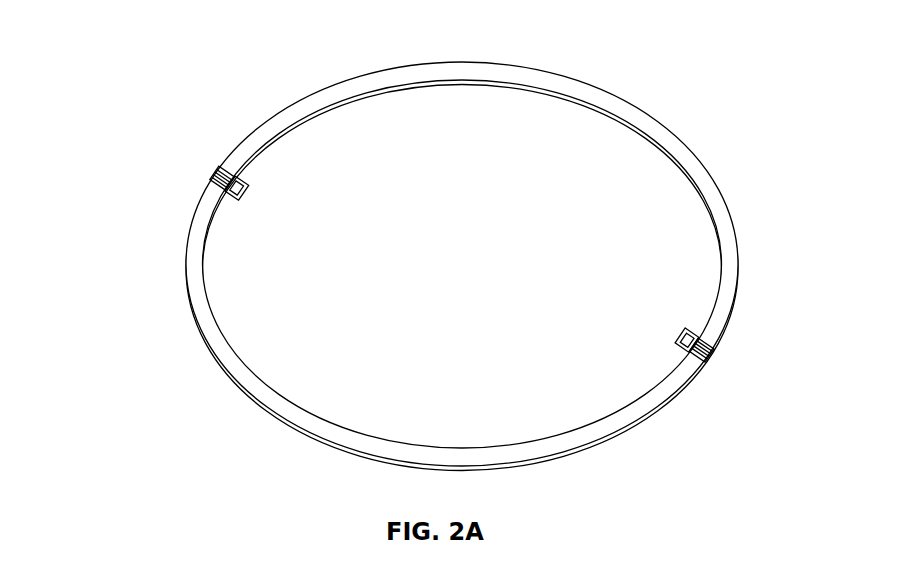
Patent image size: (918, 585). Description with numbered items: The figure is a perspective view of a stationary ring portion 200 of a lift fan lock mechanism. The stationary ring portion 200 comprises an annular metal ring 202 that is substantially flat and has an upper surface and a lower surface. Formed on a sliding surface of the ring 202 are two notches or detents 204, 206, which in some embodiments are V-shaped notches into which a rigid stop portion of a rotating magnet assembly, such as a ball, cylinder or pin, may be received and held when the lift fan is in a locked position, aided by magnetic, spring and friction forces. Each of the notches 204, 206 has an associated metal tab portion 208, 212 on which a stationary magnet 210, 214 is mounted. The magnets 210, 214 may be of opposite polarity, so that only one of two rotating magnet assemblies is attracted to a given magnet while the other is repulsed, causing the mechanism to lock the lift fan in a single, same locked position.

The stationary ring portion 200 is at (143, 113).
The annular metal ring 202 is at (246, 396).
The notch 204 is at (226, 170).
The notch 206 is at (710, 354).
The tab portion 208 is at (250, 197).
The stationary magnet 210 is at (245, 185).
The tab portion 212 is at (676, 348).
The stationary magnet 214 is at (684, 338).